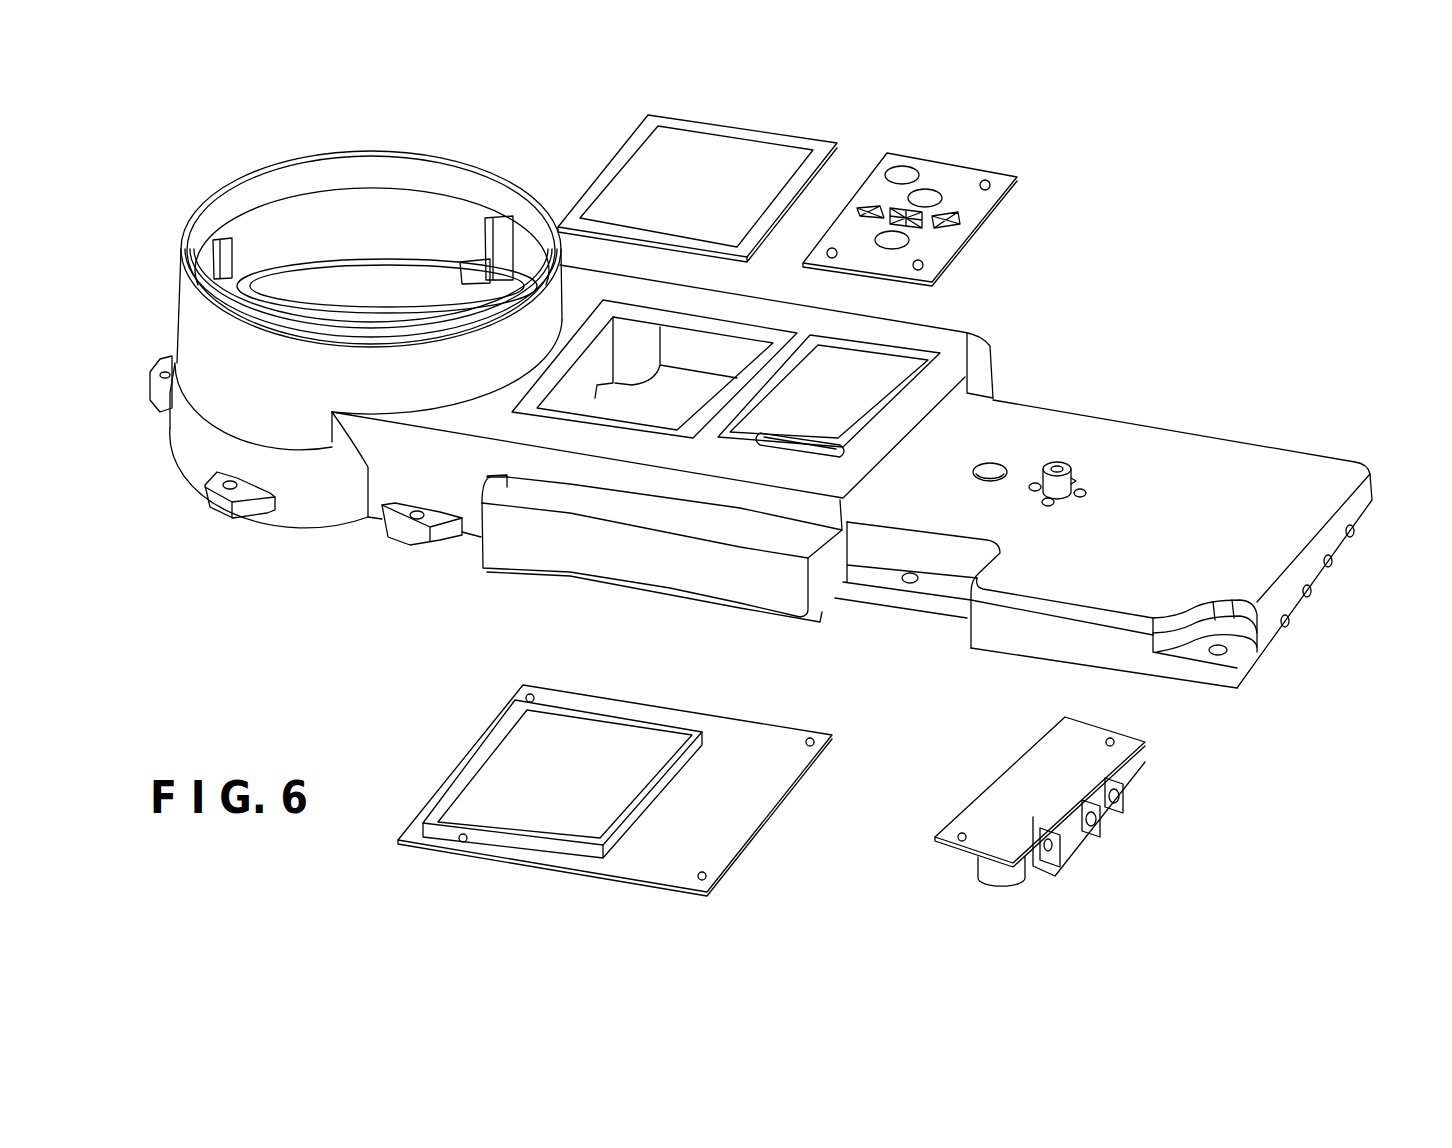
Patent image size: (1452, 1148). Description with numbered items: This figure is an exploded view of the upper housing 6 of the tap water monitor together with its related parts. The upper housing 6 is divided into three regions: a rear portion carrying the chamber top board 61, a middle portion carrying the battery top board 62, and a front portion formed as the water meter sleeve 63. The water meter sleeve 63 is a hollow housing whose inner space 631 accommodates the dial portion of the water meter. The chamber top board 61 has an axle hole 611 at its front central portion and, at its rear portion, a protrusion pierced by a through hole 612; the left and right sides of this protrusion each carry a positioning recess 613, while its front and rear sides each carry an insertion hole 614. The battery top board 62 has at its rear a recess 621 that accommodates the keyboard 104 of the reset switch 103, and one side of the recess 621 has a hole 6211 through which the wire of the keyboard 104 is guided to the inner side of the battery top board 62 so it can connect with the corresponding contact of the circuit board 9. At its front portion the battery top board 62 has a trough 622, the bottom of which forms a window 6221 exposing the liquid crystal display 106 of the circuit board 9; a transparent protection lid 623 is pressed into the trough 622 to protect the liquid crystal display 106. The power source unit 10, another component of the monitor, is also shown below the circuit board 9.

The upper housing 6 is at (1362, 510).
The chamber top board 61 is at (1267, 458).
The axle hole 611 is at (998, 467).
The through hole 612 is at (1063, 463).
The positioning recess 613 is at (1075, 480).
The insertion hole 614 is at (1088, 490).
The battery top board 62 is at (963, 338).
The recess 621 is at (862, 418).
The hole 6211 is at (792, 442).
The trough 622 is at (718, 412).
The window 6221 is at (607, 410).
The transparent protection lid 623 is at (658, 182).
The water meter sleeve 63 is at (197, 318).
The inner space 631 is at (313, 248).
The reset switch 103 is at (902, 175).
The keyboard 104 is at (958, 212).
The liquid crystal display 106 is at (637, 727).
The circuit board 9 is at (752, 790).
The power source unit 10 is at (1045, 772).